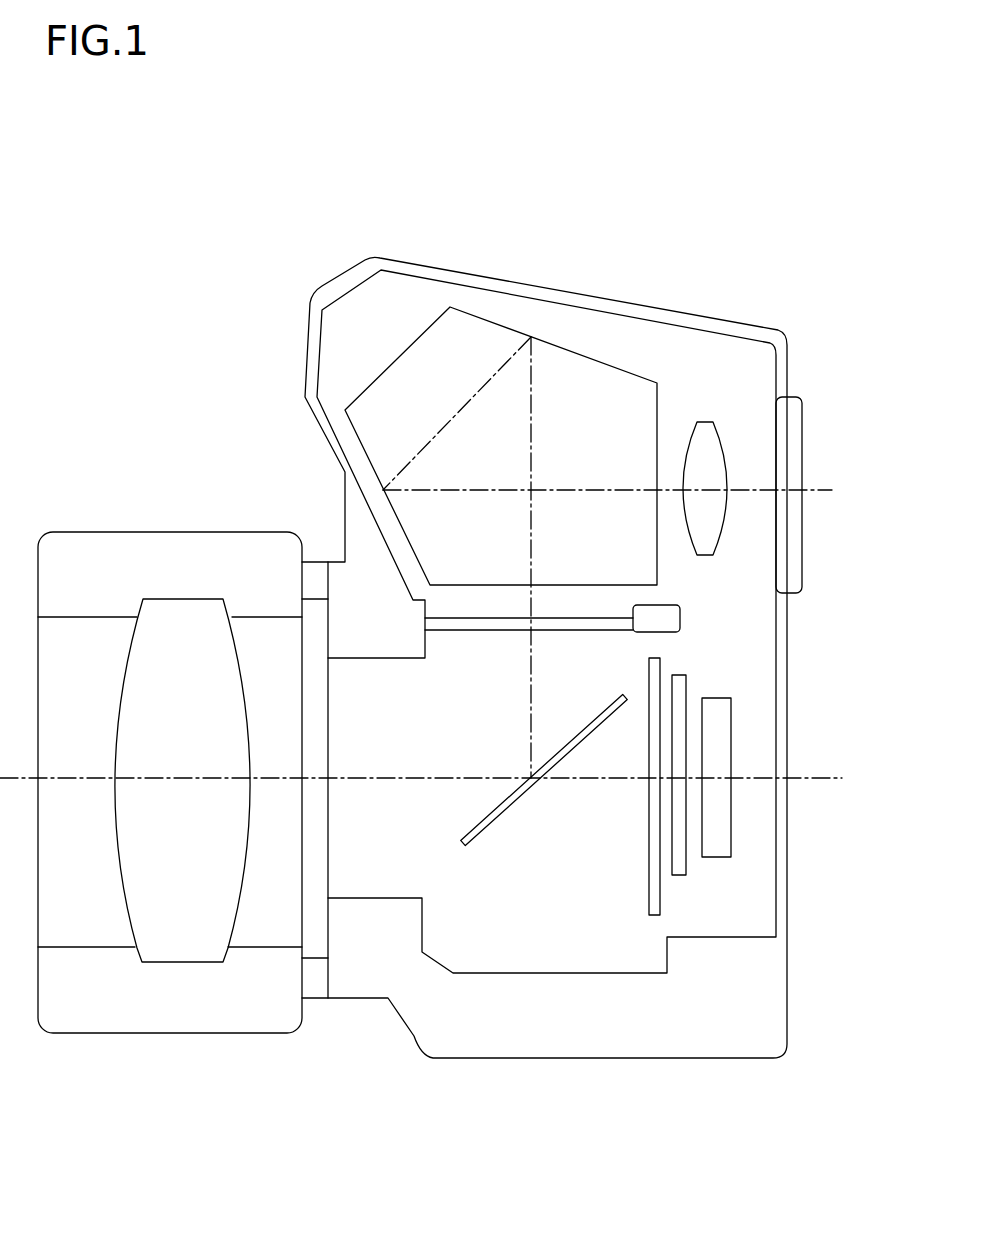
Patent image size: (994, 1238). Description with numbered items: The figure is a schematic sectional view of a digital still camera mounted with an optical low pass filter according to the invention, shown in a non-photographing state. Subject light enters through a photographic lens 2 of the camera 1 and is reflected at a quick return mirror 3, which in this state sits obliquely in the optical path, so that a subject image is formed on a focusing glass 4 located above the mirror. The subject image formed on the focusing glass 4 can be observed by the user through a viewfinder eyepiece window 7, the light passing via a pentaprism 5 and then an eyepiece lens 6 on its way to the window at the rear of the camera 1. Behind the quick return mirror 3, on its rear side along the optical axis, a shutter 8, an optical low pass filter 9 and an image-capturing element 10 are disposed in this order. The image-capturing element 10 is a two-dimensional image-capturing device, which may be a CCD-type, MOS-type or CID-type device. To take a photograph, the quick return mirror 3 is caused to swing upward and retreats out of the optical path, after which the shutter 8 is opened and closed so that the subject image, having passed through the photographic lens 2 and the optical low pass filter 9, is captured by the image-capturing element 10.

The camera 1 is at (517, 290).
The photographic lens 2 is at (138, 885).
The quick return mirror 3 is at (464, 834).
The focusing glass 4 is at (568, 626).
The pentaprism 5 is at (600, 378).
The eyepiece lens 6 is at (714, 428).
The viewfinder eyepiece window 7 is at (790, 441).
The shutter 8 is at (650, 900).
The optical low pass filter 9 is at (677, 877).
The image-capturing element 10 is at (722, 713).